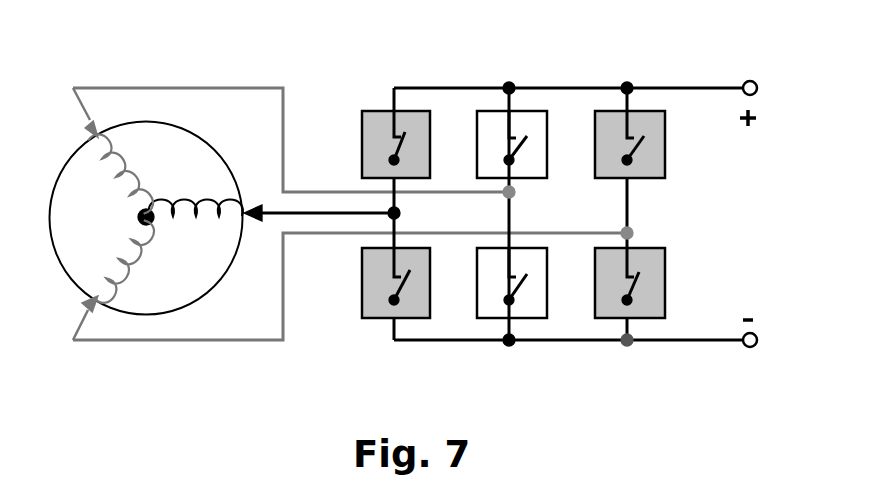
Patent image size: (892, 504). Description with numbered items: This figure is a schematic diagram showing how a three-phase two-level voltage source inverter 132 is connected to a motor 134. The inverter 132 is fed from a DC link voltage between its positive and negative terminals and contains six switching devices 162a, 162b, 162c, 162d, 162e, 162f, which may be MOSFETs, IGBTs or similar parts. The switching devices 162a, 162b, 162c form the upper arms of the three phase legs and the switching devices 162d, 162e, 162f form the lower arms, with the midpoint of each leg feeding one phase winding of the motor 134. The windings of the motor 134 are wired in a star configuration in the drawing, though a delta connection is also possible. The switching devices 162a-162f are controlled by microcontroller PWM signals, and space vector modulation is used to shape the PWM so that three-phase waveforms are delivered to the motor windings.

The motor 134 is at (135, 75).
The 3-phase 2-level voltage source inverter 132 is at (715, 62).
The switching device 162a is at (362, 118).
The switching device 162b is at (479, 110).
The switching device 162c is at (610, 111).
The switching device 162d is at (362, 272).
The switching device 162e is at (493, 318).
The switching device 162f is at (610, 319).